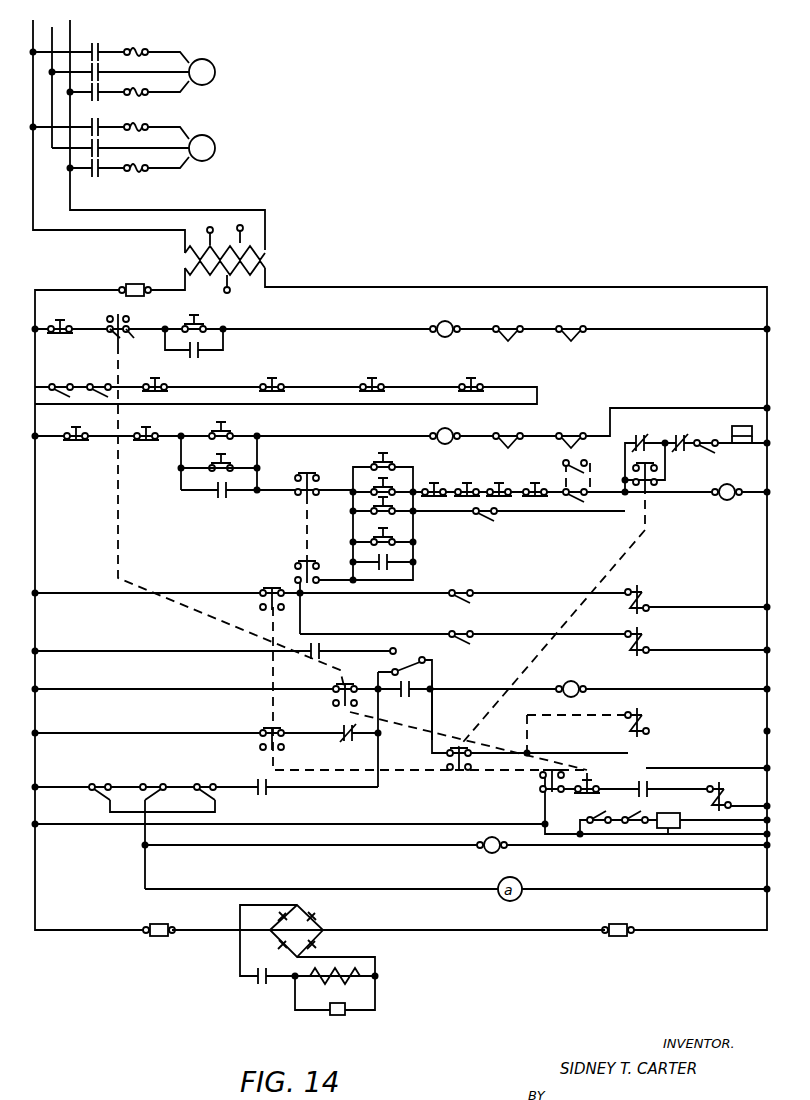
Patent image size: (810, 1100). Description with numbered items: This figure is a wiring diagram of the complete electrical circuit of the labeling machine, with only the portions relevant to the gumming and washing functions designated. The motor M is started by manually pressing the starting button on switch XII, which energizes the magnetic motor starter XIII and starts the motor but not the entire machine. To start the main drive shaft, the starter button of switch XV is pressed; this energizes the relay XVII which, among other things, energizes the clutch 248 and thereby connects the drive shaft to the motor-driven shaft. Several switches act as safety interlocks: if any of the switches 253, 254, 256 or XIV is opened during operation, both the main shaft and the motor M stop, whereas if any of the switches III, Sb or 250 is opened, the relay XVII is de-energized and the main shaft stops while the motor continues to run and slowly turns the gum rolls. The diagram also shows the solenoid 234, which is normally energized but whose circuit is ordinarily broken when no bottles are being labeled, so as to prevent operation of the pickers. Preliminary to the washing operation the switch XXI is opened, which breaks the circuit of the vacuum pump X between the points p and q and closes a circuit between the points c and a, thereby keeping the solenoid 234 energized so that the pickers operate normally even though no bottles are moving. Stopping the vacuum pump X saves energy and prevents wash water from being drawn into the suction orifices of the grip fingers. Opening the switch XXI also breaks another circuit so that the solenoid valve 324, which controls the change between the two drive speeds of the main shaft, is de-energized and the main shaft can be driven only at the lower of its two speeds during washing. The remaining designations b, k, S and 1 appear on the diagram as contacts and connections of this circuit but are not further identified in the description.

The magnetic motor starter XIII is at (127, 36).
The motor M is at (215, 72).
The switch XXI is at (139, 321).
The point p is at (106, 334).
The point q is at (129, 335).
The switch 254 is at (58, 380).
The switch 256 is at (110, 360).
The switch 253 is at (176, 383).
The contacts 1 is at (455, 370).
The vacuum pump X is at (452, 325).
The point c is at (540, 395).
The switch XIV is at (140, 445).
The switch XII is at (254, 427).
The switch III is at (300, 503).
The switch XV is at (410, 458).
The switch Sb is at (526, 480).
The switch 250 is at (612, 446).
The relay XVII is at (722, 503).
The point a is at (383, 695).
The switch contact b is at (433, 694).
The solenoid 234 is at (650, 712).
The contact k is at (608, 782).
The solenoid valve 324 is at (744, 762).
The contact S is at (573, 796).
The clutch 248 is at (402, 954).